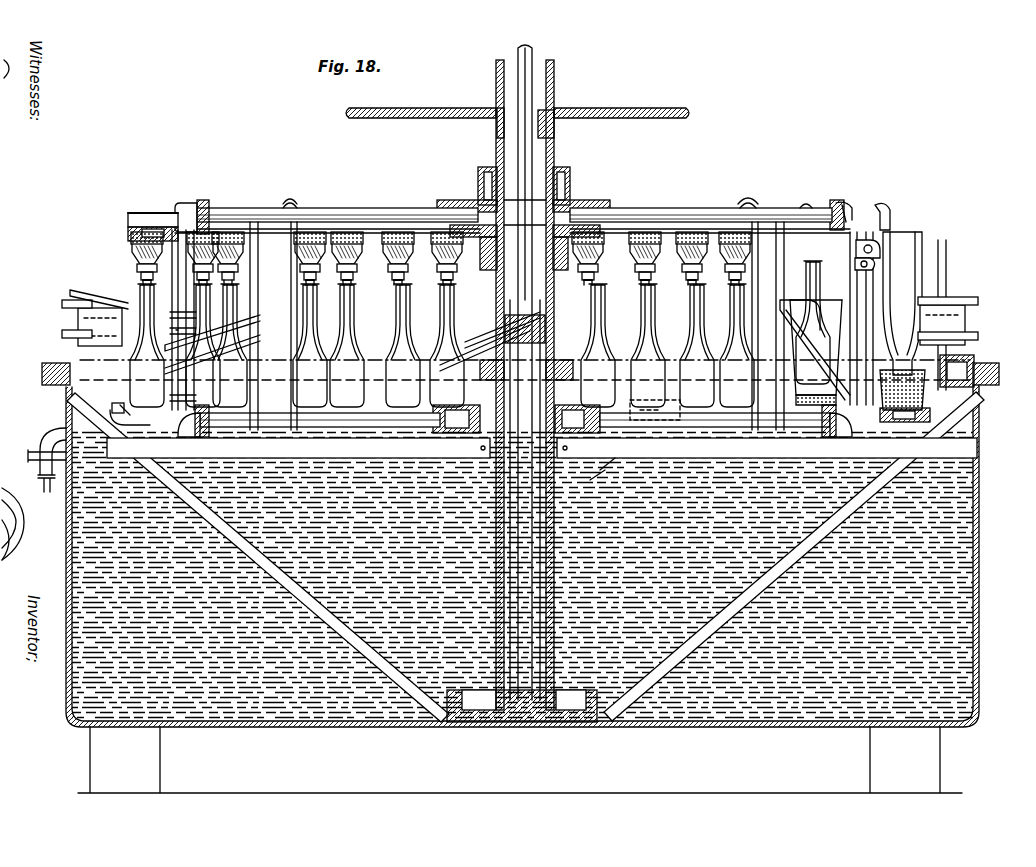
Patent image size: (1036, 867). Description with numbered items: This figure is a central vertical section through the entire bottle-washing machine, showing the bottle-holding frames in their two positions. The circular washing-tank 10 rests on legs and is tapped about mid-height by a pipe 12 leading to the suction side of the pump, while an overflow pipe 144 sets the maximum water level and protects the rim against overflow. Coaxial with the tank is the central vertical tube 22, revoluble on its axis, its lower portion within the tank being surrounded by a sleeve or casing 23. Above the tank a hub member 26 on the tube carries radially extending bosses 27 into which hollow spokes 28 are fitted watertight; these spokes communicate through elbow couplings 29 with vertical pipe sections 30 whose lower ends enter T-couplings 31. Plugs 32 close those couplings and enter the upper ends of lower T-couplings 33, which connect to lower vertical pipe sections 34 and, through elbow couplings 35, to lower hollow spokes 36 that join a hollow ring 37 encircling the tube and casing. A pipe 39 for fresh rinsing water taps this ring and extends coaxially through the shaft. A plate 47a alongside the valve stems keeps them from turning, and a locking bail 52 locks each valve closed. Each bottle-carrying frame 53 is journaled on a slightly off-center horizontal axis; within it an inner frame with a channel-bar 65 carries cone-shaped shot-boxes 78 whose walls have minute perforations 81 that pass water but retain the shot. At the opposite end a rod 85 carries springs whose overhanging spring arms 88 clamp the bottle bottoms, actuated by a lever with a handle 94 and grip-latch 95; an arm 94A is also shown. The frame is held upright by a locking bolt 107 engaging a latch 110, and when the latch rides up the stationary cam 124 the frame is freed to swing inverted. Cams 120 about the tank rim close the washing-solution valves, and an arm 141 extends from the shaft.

The washing-tank 10 is at (975, 468).
The pipe 12 is at (20, 488).
The central vertical tube or pipe 22 is at (585, 480).
The sleeve or casing 23 is at (613, 458).
The hub member 26 is at (572, 186).
The radially extending bosses 27 is at (462, 200).
The hollow spokes 28 is at (370, 200).
The elbow couplings 29 is at (184, 206).
The vertical pipe sections 30 is at (176, 288).
The T-couplings 31 is at (176, 318).
The plugs 32 is at (178, 340).
The T-couplings 33 is at (178, 358).
The lower vertical pipe sections 34 is at (178, 385).
The elbow couplings 35 is at (192, 430).
The lower radially extending pipes or hollow spokes 36 is at (246, 427).
The hollow ring 37 is at (462, 432).
The pipe 39 is at (518, 140).
The plate 47a is at (980, 312).
The locking bail 52 is at (80, 300).
The bottle-carrying frame 53 is at (140, 213).
The channel-bar 65 is at (128, 223).
The shot-boxes 78 is at (130, 250).
The perforations 81 is at (130, 238).
The rod 85 is at (882, 240).
The spring arm 88 is at (135, 427).
The handle 94 is at (286, 365).
The arm 94A is at (486, 364).
The grip-latch 95 is at (282, 333).
The locking bolt 107 is at (880, 264).
The latch 110 is at (978, 396).
The cams 120 is at (340, 280).
The stationary cam 124 is at (660, 405).
The arm 141 is at (517, 126).
The overflow pipe 144 is at (44, 430).